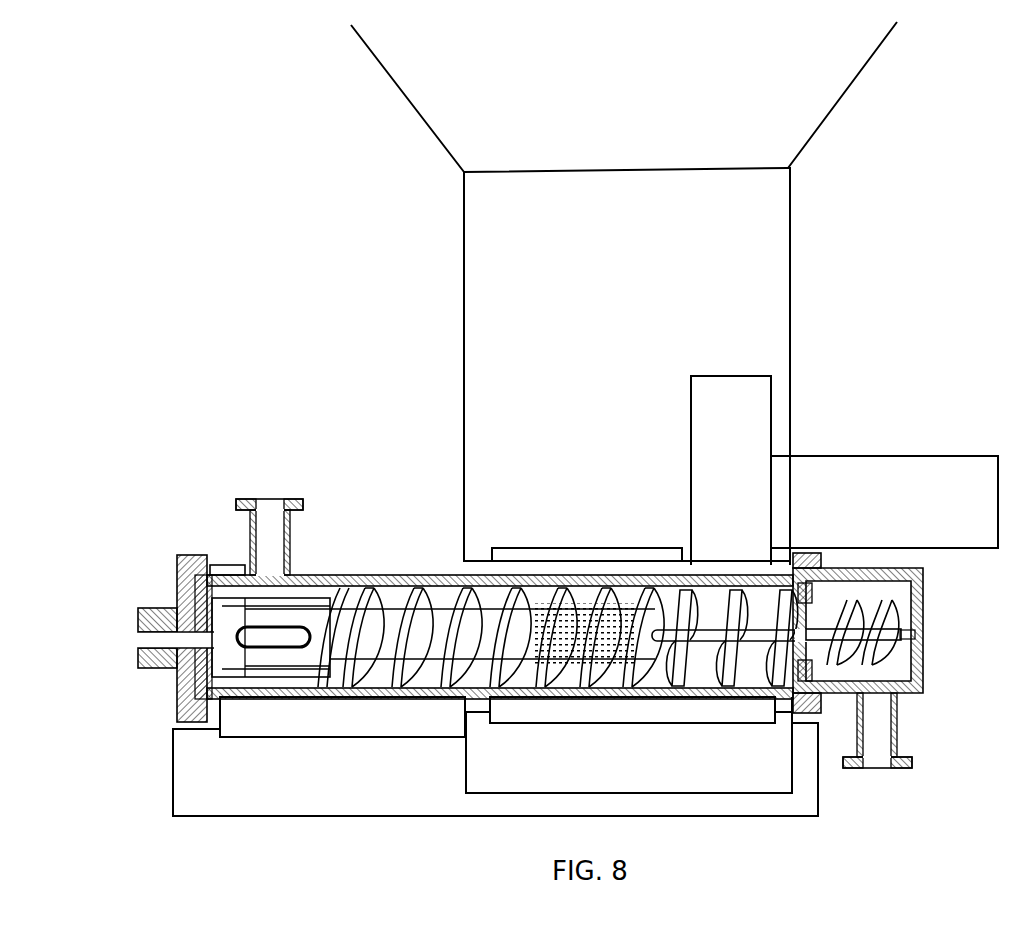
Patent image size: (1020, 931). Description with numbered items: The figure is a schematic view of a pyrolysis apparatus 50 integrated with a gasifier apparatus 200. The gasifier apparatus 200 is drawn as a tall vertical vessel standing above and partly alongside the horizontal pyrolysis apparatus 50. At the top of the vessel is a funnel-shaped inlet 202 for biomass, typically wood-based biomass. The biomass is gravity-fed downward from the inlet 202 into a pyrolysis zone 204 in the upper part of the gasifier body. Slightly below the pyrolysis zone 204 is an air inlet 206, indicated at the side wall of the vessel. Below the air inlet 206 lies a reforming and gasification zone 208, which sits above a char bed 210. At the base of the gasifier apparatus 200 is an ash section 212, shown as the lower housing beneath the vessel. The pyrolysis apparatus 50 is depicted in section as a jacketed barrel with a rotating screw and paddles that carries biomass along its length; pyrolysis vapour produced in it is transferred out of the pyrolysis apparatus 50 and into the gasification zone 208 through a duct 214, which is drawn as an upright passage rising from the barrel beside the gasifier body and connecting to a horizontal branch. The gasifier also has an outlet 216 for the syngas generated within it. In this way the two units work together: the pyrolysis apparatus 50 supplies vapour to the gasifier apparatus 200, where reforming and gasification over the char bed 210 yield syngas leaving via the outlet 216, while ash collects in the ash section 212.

The pyrolysis apparatus 50 is at (152, 573).
The gasifier apparatus 200 is at (336, 333).
The inlet 202 is at (642, 106).
The pyrolysis zone 204 is at (644, 259).
The air inlet 206 is at (461, 298).
The reforming and gasification zone 208 is at (646, 427).
The char bed 210 is at (646, 481).
The ash section 212 is at (648, 766).
The duct 214 is at (757, 406).
The outlet 216 is at (352, 722).